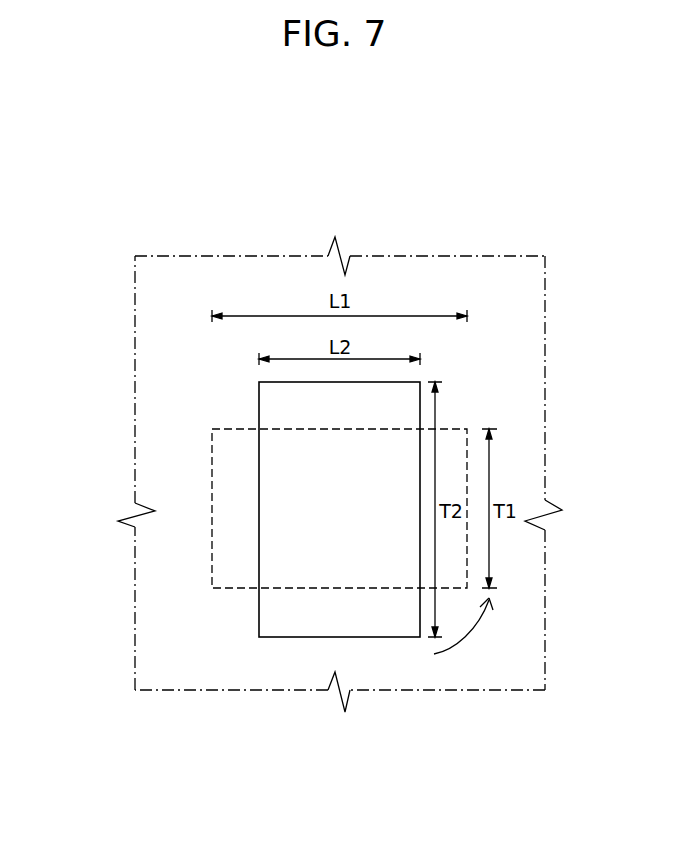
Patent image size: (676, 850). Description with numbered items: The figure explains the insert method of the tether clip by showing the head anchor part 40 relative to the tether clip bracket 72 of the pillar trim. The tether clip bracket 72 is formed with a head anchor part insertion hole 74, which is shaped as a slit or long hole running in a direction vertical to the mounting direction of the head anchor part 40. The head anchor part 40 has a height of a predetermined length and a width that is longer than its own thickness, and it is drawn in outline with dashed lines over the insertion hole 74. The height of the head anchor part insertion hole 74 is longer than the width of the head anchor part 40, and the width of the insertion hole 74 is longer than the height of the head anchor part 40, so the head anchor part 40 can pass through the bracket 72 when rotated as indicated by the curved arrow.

The head anchor part 40 is at (212, 550).
The tether clip bracket 72 is at (262, 676).
The head anchor part insertion hole 74 is at (372, 611).